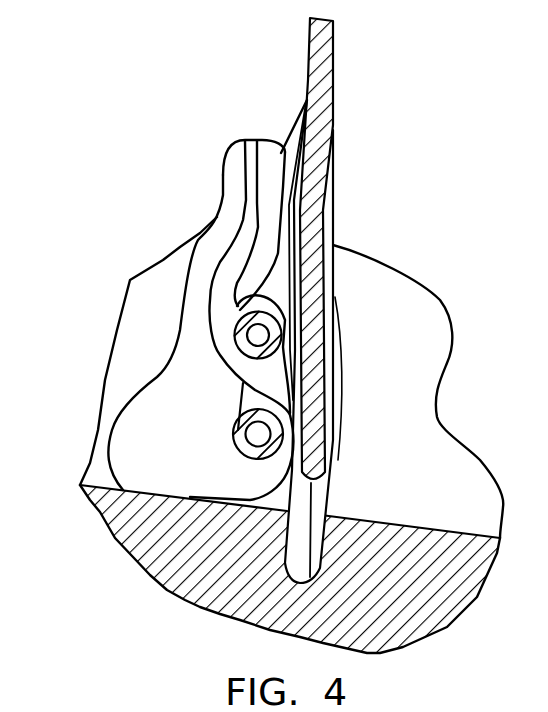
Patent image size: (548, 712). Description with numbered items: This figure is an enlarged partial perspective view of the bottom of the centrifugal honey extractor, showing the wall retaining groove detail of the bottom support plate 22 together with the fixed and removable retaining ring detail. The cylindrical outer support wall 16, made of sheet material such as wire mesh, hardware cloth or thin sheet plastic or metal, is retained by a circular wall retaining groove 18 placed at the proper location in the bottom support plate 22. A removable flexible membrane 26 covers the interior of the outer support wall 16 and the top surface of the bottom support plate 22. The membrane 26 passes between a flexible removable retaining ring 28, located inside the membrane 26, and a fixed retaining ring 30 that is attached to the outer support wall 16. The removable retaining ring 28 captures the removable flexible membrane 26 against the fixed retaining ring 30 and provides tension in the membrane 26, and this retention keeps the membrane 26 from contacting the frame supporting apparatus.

The outer support wall 16 is at (340, 98).
The wall retaining groove 18 is at (267, 560).
The bottom support plate 22 is at (437, 513).
The removable flexible membrane 26 is at (220, 203).
The flexible removable retaining ring 28 is at (230, 457).
The fixed retaining ring 30 is at (237, 353).